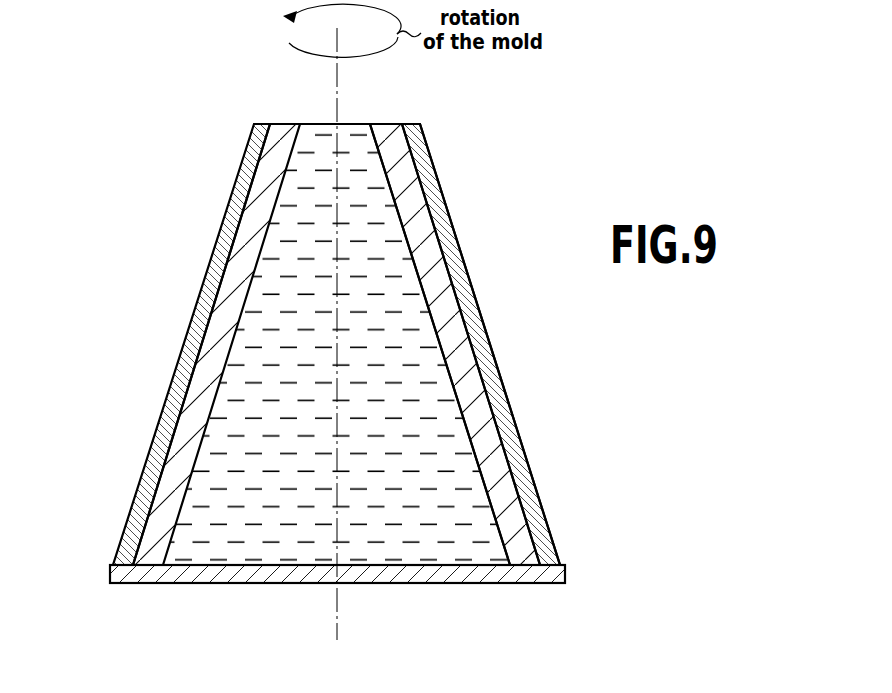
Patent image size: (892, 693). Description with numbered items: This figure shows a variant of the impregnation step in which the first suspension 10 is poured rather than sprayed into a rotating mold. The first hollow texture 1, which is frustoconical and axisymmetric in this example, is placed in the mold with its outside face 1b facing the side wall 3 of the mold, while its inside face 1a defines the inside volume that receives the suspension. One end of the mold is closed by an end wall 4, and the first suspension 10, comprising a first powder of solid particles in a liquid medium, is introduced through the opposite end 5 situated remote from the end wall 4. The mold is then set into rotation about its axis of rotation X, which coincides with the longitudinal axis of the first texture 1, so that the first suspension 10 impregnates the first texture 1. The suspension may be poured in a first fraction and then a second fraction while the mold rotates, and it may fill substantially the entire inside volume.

The first hollow texture 1 is at (355, 325).
The inside face of the first texture 1a is at (410, 250).
The outside face of the first texture 1b is at (420, 177).
The side wall of the mold 3 is at (517, 436).
The end wall 4 is at (247, 575).
The end of the mold 5 is at (322, 124).
The first suspension 10 is at (293, 272).
The axis of rotation X is at (338, 75).